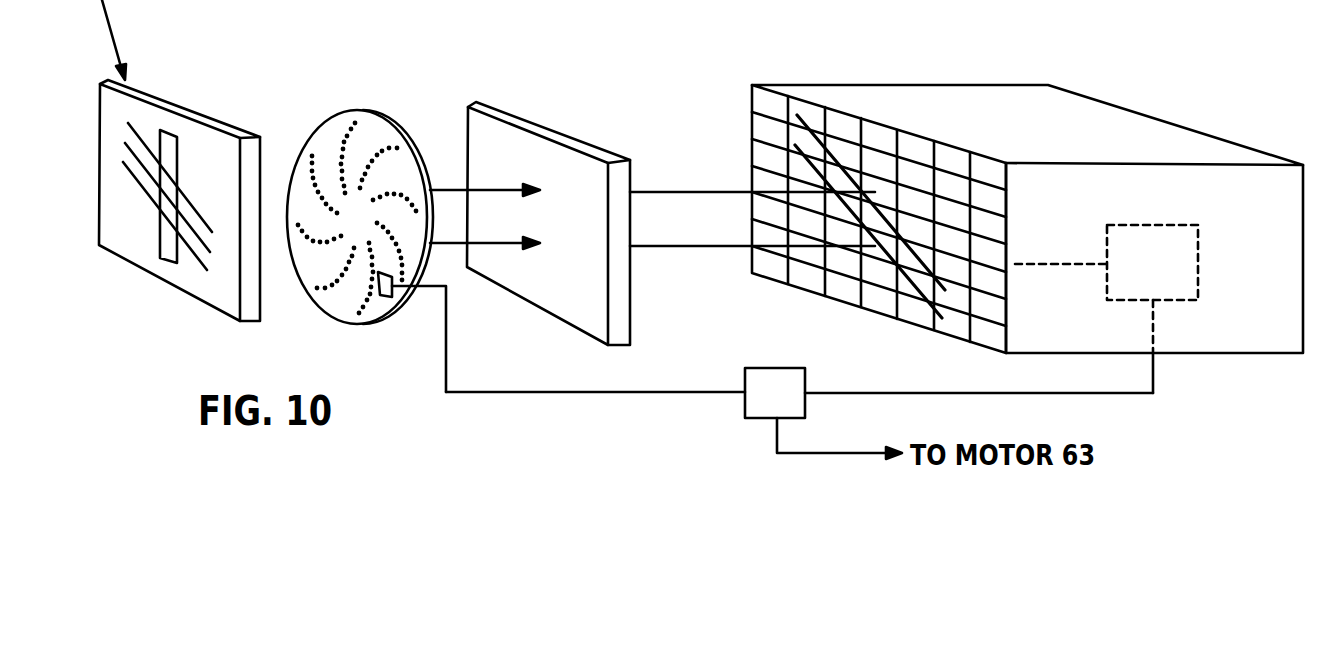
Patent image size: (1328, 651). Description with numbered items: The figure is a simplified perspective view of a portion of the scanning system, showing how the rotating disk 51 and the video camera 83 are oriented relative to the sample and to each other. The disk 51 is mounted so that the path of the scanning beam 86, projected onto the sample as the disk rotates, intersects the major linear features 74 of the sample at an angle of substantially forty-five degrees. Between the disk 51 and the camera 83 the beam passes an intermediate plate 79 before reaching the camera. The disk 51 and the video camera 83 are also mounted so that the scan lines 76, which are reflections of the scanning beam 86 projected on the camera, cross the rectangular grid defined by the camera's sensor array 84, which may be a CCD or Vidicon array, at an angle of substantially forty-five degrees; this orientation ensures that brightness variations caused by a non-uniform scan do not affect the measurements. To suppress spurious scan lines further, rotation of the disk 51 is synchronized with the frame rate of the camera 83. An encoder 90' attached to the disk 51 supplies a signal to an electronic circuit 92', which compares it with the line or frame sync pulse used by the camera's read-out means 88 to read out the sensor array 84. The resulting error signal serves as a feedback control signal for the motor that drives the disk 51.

The major linear features 74 is at (180, 172).
The scanning beam 86 is at (195, 258).
The disk 51 is at (337, 110).
The encoder 90' is at (409, 342).
The filter plate 79 is at (522, 122).
The video camera 83 is at (1009, 112).
The sensor array 84 is at (912, 148).
The scan lines 76 is at (828, 157).
The read-out means 88 is at (1200, 263).
The electronic circuit 92' is at (799, 393).